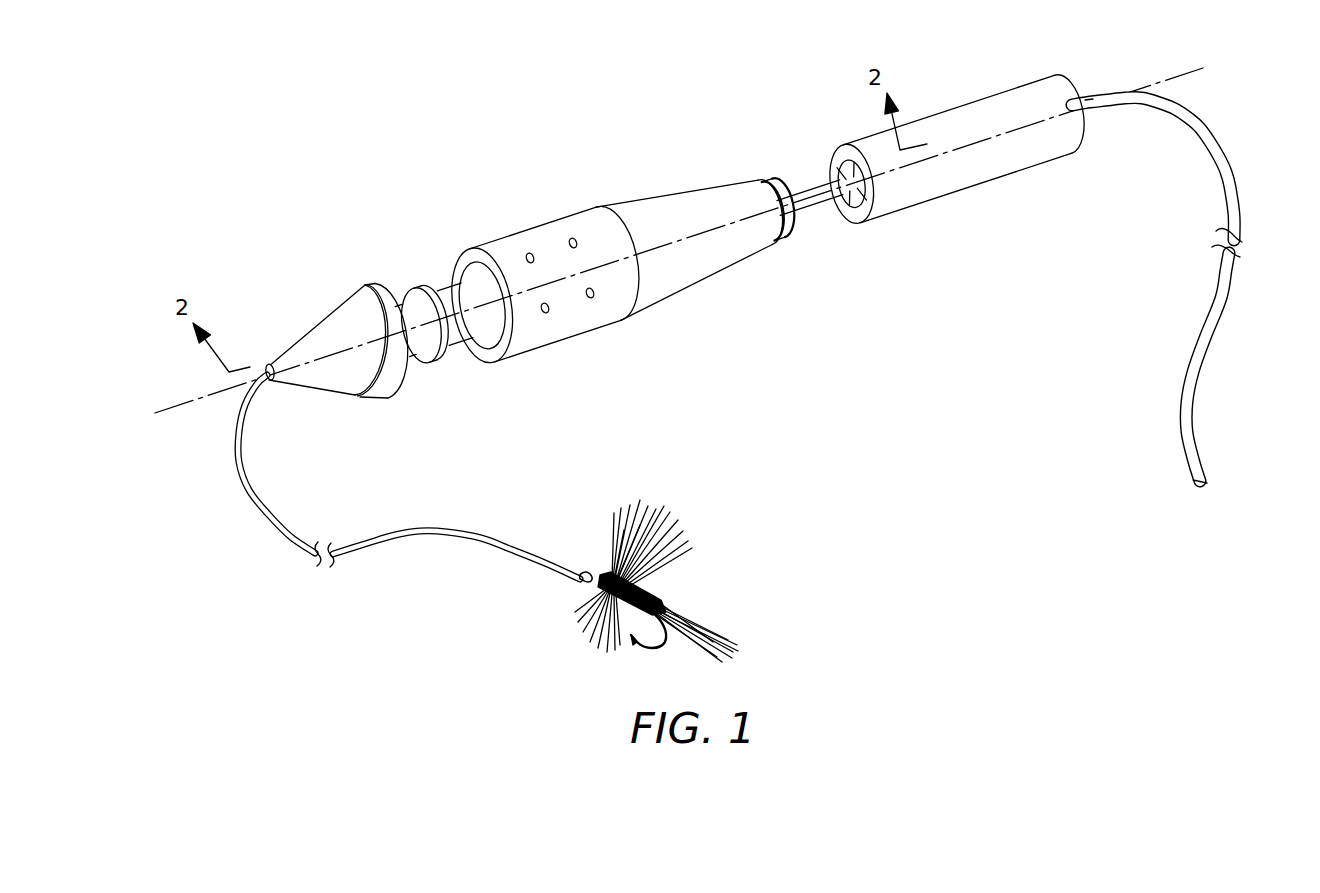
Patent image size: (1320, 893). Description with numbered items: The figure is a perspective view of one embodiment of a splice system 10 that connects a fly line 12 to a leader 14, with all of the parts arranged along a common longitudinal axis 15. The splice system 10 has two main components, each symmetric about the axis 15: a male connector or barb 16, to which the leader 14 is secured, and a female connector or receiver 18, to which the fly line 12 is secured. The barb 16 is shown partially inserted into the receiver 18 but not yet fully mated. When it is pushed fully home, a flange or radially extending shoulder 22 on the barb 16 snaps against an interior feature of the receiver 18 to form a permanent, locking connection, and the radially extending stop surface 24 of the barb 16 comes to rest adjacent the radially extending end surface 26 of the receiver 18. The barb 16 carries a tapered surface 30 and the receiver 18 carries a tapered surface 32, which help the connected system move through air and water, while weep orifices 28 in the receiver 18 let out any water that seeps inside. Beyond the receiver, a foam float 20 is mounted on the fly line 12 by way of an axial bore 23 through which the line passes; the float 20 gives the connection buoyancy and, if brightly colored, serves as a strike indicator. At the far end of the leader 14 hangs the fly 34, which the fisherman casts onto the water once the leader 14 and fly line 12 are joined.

The splice system 10 is at (617, 124).
The fly line 12 is at (1226, 163).
The leader 14 is at (248, 497).
The longitudinal axis 15 is at (1159, 82).
The barb 16 is at (457, 338).
The receiver 18 is at (588, 315).
The float 20 is at (969, 179).
The flange 22 is at (415, 291).
The axial bore 23 is at (843, 209).
The stop surface 24 is at (410, 376).
The end surface 26 is at (493, 360).
The weep orifices 28 is at (546, 304).
The tapered surface 30 is at (318, 377).
The tapered surface 32 is at (688, 268).
The fly 34 is at (655, 594).